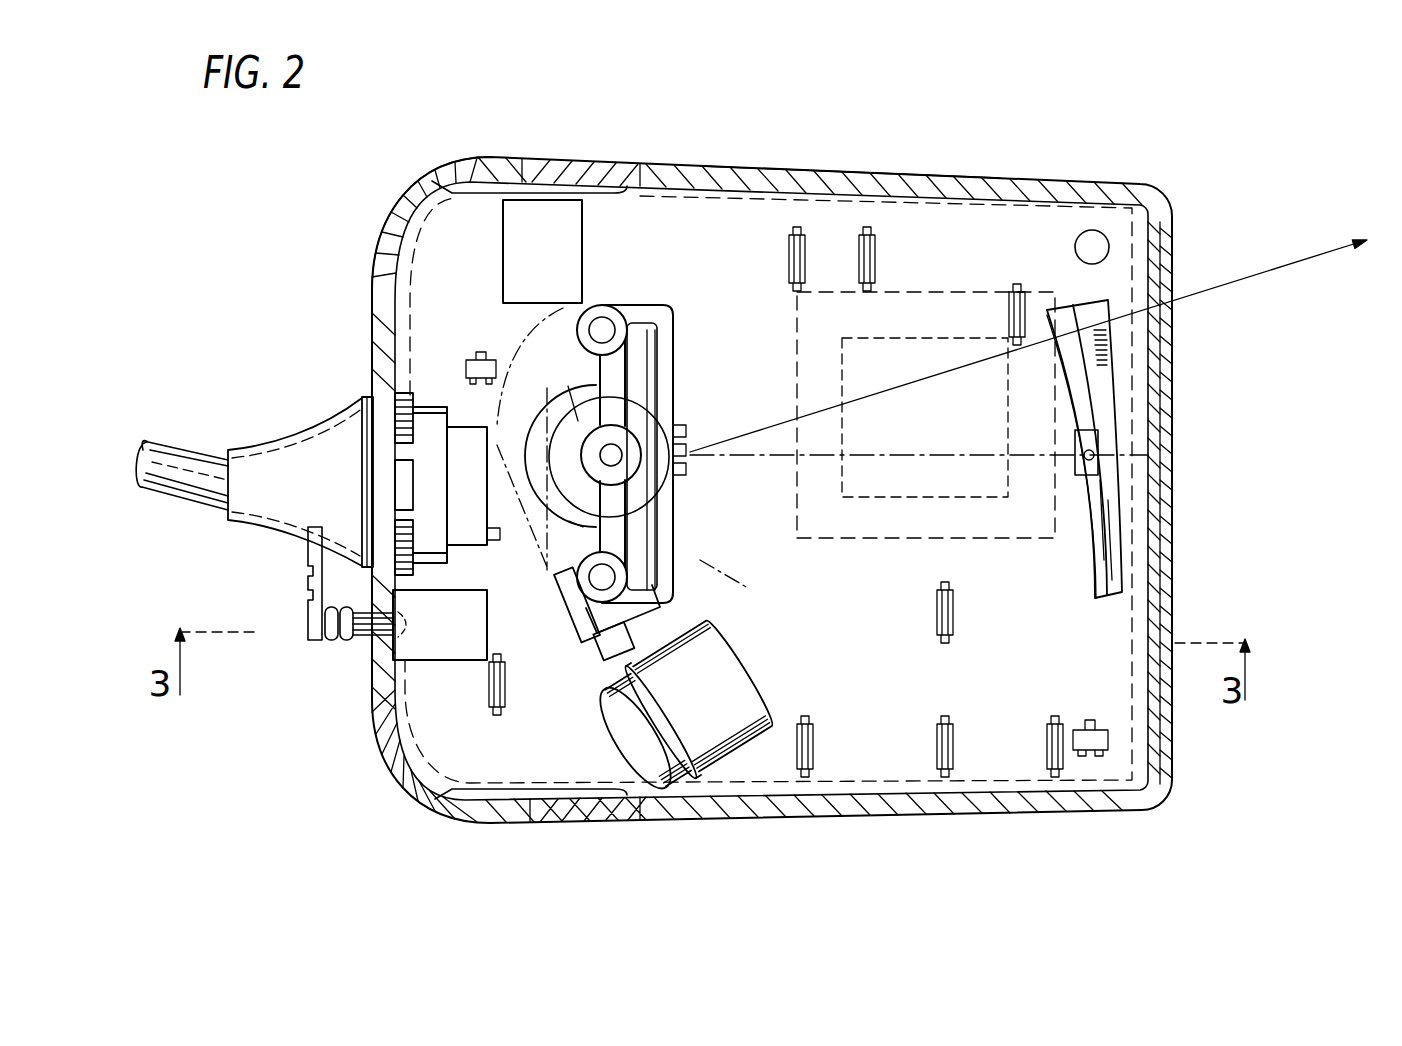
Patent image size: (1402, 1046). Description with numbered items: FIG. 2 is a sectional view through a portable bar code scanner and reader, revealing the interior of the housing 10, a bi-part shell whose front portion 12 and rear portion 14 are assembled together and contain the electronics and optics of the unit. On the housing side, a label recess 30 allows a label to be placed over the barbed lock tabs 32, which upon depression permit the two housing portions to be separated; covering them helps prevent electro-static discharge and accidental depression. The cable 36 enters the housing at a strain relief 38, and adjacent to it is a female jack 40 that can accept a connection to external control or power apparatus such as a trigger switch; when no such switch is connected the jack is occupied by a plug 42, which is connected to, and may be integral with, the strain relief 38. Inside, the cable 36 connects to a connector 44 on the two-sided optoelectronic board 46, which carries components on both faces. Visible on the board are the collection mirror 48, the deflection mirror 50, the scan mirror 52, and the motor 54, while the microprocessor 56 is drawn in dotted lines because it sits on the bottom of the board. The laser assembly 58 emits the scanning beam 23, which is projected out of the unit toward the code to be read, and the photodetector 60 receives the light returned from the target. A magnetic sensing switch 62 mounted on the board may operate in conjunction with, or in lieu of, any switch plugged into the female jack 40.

The housing 10 is at (762, 150).
The front portion 12 is at (826, 165).
The rear portion 14 is at (462, 158).
The scanning beam 23 is at (1028, 336).
The label recess 30 is at (604, 163).
The lock tabs 32 is at (543, 164).
The cable 36 is at (205, 452).
The strain relief 38 is at (298, 440).
The female jack 40 is at (378, 640).
The plug 42 is at (340, 640).
The connector 44 is at (490, 535).
The optoelectronic board 46 is at (942, 232).
The collection mirror 48 is at (1118, 370).
The deflection mirror 50 is at (1100, 455).
The scan mirror 52 is at (603, 322).
The motor 54 is at (580, 383).
The microprocessor 56 is at (1040, 545).
The laser assembly 58 is at (743, 748).
The photodetector 60 is at (580, 630).
The magnetic sensing switch 62 is at (1092, 245).